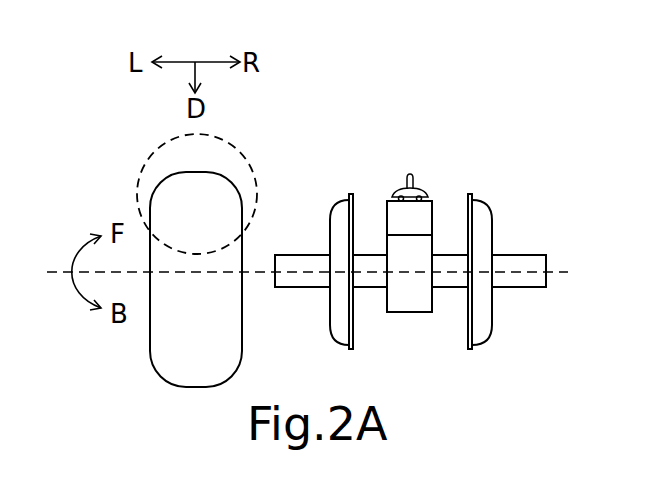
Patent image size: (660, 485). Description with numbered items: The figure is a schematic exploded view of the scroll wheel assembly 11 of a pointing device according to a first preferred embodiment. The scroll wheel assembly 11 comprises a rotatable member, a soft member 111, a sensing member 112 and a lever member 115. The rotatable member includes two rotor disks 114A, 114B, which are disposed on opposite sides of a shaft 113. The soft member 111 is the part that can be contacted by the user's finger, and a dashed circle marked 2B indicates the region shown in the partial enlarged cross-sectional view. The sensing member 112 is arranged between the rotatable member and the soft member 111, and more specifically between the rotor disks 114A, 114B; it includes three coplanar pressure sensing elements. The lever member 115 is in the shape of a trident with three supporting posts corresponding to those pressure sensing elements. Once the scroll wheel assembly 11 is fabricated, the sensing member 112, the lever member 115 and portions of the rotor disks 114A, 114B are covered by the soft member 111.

The scroll wheel assembly 11 is at (97, 110).
The soft member 111 is at (190, 183).
The cross-section reference (FIG. 2B) 2B is at (137, 193).
The sensing member 112 is at (425, 212).
The shaft 113 is at (517, 262).
The rotor disk 114A is at (337, 303).
The rotor disk 114B is at (483, 303).
The lever member 115 is at (412, 178).